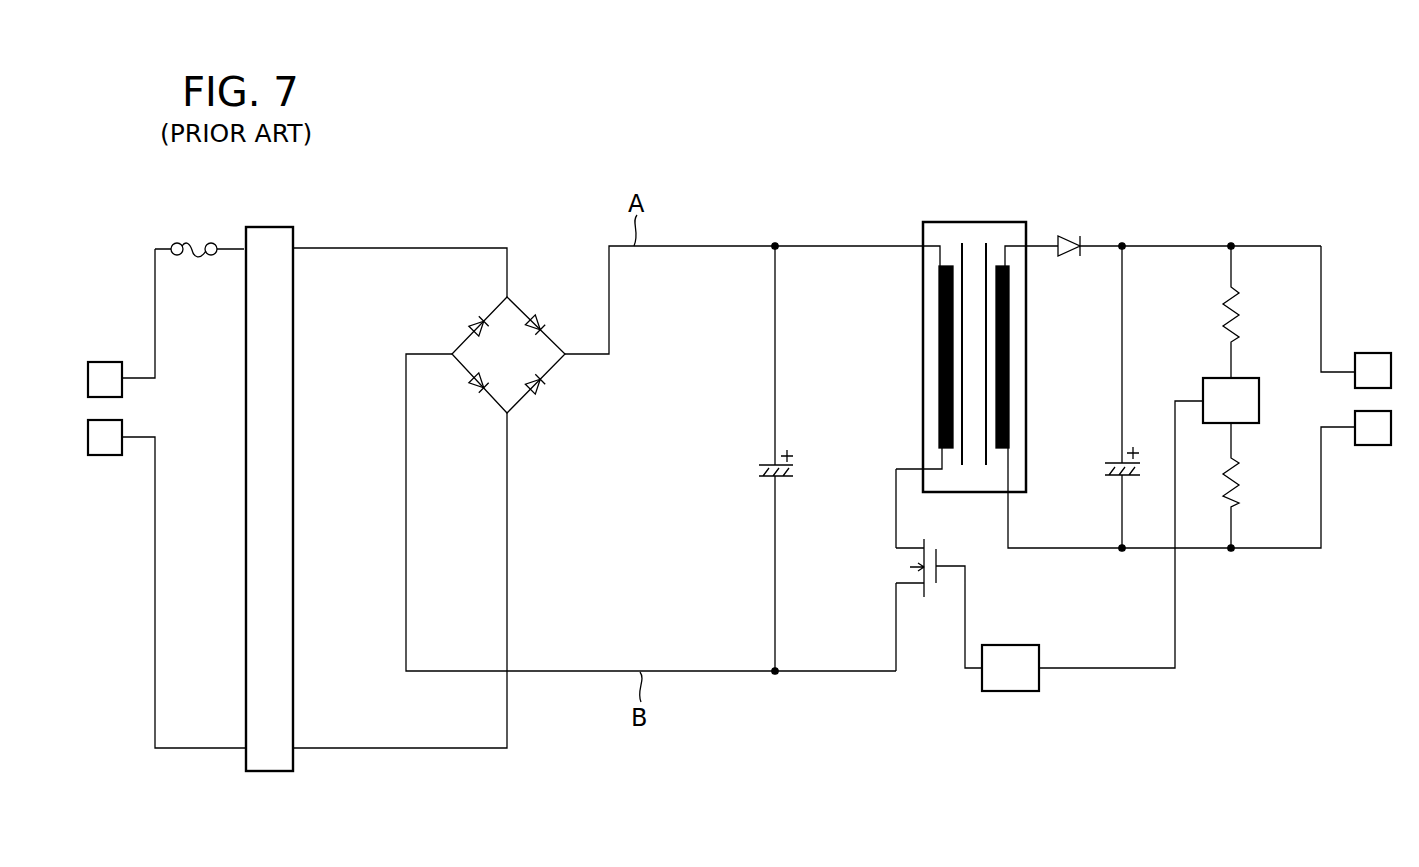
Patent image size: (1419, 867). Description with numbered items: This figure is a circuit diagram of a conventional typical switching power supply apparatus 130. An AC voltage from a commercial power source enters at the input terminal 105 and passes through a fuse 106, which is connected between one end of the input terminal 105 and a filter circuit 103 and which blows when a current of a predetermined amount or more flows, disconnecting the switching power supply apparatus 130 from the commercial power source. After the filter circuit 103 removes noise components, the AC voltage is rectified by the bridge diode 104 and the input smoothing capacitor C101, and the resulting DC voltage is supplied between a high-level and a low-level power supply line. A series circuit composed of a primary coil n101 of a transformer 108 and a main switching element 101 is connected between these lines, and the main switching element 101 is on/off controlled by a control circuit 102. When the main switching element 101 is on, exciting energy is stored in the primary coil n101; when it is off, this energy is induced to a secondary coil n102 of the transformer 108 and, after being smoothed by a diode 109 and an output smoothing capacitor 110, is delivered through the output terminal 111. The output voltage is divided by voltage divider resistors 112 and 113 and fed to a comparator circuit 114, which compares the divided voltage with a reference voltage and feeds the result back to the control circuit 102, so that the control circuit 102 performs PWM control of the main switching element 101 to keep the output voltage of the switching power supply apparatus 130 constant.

The main switching element 101 is at (897, 566).
The control circuit 102 is at (1027, 646).
The filter circuit 103 is at (283, 227).
The bridge diode 104 is at (530, 290).
The input terminal 105 is at (103, 350).
The fuse 106 is at (183, 243).
The transformer 108 is at (985, 222).
The diode 109 is at (1070, 238).
The output smoothing capacitor 110 is at (1114, 461).
The output terminal 111 is at (1381, 350).
The voltage divider resistor 112 is at (1240, 323).
The voltage divider resistor 113 is at (1242, 497).
The comparator circuit 114 is at (1245, 378).
The switching power supply apparatus 130 is at (1238, 183).
The input smoothing capacitor C101 is at (803, 450).
The primary coil n101 is at (889, 358).
The secondary coil n102 is at (1060, 358).